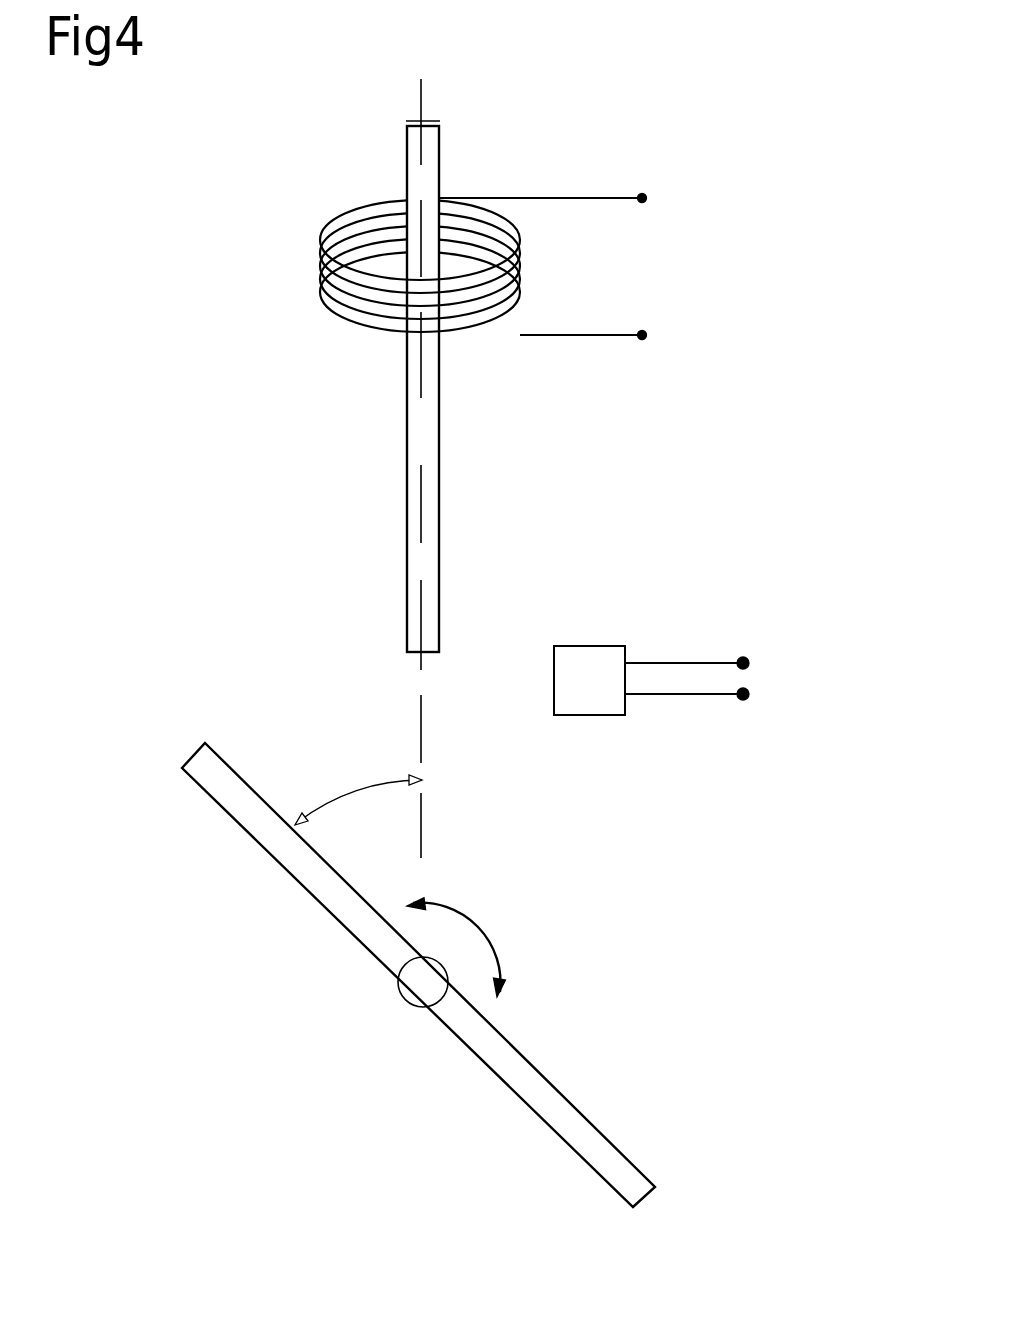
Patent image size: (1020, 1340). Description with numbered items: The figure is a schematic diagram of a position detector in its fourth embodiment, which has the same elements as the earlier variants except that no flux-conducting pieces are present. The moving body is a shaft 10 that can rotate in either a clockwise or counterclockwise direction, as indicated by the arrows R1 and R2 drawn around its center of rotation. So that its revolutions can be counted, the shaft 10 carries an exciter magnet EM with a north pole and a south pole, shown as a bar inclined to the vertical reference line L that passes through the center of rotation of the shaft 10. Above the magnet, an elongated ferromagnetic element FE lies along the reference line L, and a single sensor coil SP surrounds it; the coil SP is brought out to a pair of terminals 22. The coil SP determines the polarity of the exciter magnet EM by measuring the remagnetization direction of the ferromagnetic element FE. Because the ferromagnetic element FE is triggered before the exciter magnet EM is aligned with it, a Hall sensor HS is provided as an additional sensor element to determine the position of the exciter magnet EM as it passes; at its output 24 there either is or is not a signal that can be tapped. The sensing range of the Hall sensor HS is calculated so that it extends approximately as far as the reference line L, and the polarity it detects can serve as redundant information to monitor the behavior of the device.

The reference line L is at (426, 98).
The sensor coil SP is at (525, 267).
The ferromagnetic element FE is at (425, 443).
The coil terminals 22 is at (655, 197).
The Hall sensor HS is at (587, 683).
The output 24 is at (762, 668).
The exciter magnet EM is at (562, 1120).
The shaft 10 is at (420, 983).
The rotation direction R1 is at (489, 963).
The rotation direction R2 is at (443, 886).